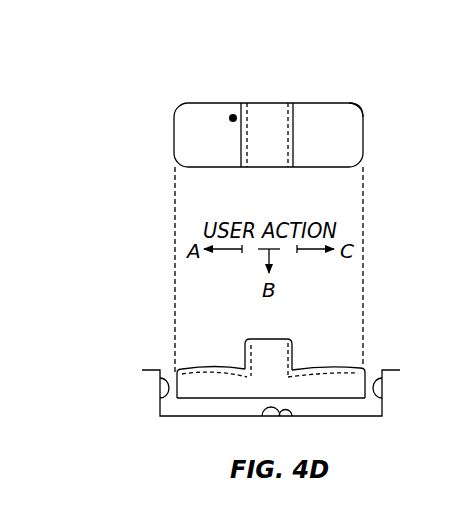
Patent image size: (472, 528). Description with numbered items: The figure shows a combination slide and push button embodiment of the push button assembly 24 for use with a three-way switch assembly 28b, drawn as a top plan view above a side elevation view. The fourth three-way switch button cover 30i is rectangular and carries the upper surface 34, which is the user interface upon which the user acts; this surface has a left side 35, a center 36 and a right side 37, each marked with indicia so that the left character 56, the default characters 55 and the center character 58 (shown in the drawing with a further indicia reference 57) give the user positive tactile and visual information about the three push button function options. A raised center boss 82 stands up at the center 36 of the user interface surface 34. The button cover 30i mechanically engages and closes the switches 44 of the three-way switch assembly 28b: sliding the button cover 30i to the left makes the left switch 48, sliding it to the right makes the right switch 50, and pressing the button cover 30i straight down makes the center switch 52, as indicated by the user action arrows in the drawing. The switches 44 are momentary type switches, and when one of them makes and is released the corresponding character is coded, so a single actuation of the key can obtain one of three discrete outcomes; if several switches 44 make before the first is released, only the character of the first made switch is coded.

The push button assembly 24 is at (128, 199).
The three-way switch assembly 28b is at (198, 418).
The fourth three-way switch button cover 30i is at (365, 140).
The upper surface 34 is at (231, 114).
The left side 35 is at (182, 135).
The center 36 is at (268, 162).
The right side 37 is at (308, 160).
The switches 44 is at (154, 391).
The left switch 48 is at (165, 378).
The right switch 50 is at (382, 353).
The center switch 52 is at (292, 413).
The default characters 55 is at (273, 112).
The left character 56 is at (201, 124).
The letters BC indicia 57 is at (322, 125).
The center character 58 is at (348, 125).
The raised center boss 82 is at (291, 341).